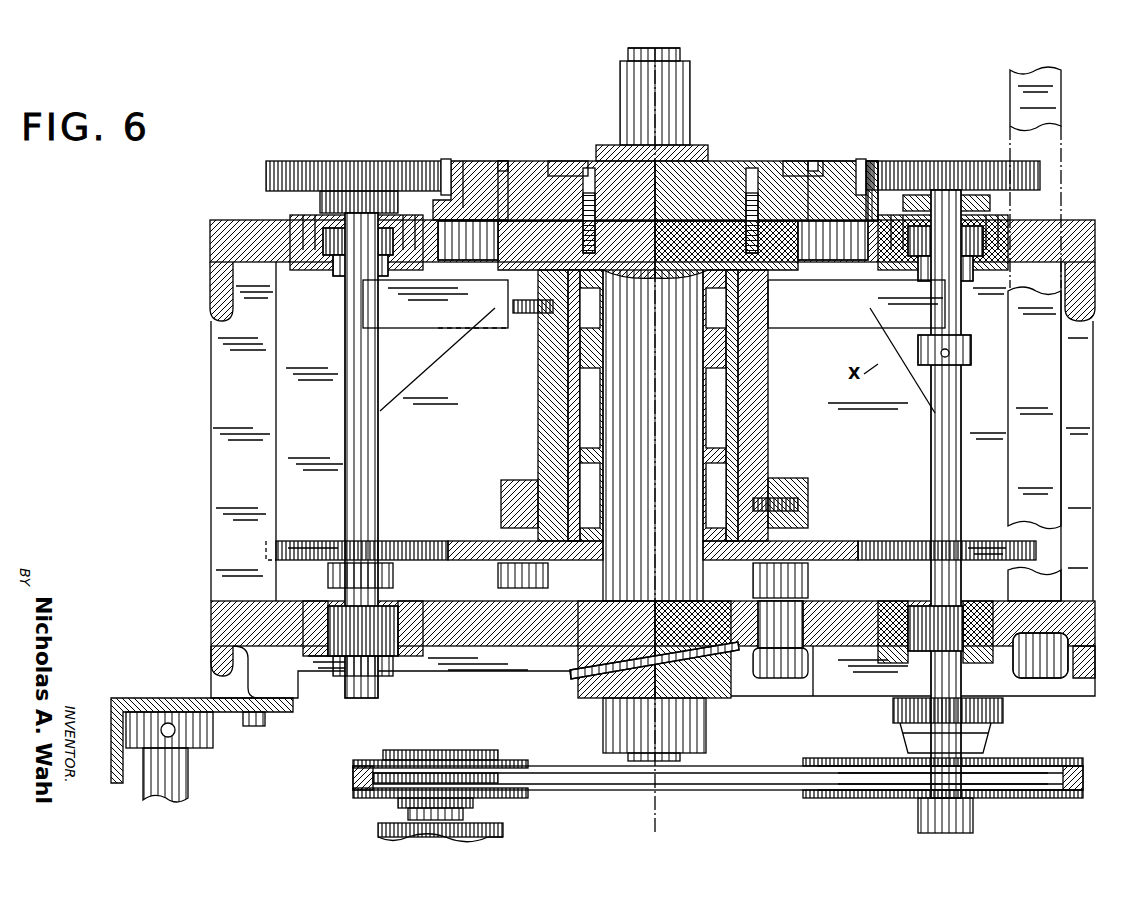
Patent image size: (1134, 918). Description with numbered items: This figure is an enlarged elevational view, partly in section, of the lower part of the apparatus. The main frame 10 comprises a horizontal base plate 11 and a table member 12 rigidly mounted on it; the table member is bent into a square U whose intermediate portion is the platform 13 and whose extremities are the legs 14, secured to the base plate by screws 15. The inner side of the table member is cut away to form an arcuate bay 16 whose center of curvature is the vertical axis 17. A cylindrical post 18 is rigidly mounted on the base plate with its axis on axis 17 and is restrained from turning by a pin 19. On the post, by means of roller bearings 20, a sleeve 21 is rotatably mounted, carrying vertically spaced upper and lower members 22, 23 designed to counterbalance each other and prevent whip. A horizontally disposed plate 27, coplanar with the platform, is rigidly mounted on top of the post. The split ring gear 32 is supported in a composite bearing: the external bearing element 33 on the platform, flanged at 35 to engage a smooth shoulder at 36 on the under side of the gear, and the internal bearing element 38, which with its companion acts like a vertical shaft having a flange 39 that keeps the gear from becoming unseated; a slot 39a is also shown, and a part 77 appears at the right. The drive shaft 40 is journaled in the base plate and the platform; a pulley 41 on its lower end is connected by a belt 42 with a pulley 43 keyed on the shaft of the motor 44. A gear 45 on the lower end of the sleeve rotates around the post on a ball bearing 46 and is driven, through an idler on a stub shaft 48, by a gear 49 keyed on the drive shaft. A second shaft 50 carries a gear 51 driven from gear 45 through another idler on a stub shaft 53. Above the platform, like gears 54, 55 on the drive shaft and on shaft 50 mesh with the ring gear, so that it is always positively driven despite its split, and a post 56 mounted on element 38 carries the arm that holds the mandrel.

The main frame 10 is at (201, 508).
The base plate 11 is at (454, 655).
The table member 12 is at (193, 240).
The platform 13 is at (250, 212).
The legs 14 is at (222, 370).
The screws 15 is at (250, 718).
The arcuate bay 16 is at (436, 242).
The vertical axis 17 is at (628, 46).
The cylindrical post 18 is at (624, 378).
The pin 19 is at (560, 670).
The roller bearings 20 is at (560, 318).
The sleeve 21 is at (552, 405).
The upper member 22 is at (478, 320).
The lower member 23 is at (493, 482).
The horizontally disposed plate 27 is at (520, 240).
The split ring gear 32 is at (500, 152).
The external bearing element 33 is at (438, 160).
The flange 35 is at (456, 153).
The shoulder 36 is at (850, 160).
The internal bearing element 38 is at (590, 165).
The flange 39 is at (552, 160).
The slot 39a is at (494, 153).
The drive shaft 40 is at (940, 152).
The pulley 41 is at (888, 790).
The belt 42 is at (345, 768).
The motor pulley 43 is at (368, 748).
The motor 44 is at (495, 820).
The gear 45 is at (478, 538).
The ball bearing 46 is at (800, 558).
The stub shaft 48 is at (800, 590).
The gear 49 is at (898, 533).
The shaft 50 is at (352, 153).
The gear 51 is at (410, 533).
The stub shaft 53 is at (490, 568).
The gear 54 is at (984, 155).
The gear 55 is at (300, 153).
The post 56 is at (678, 44).
The bracket 77 is at (1002, 66).